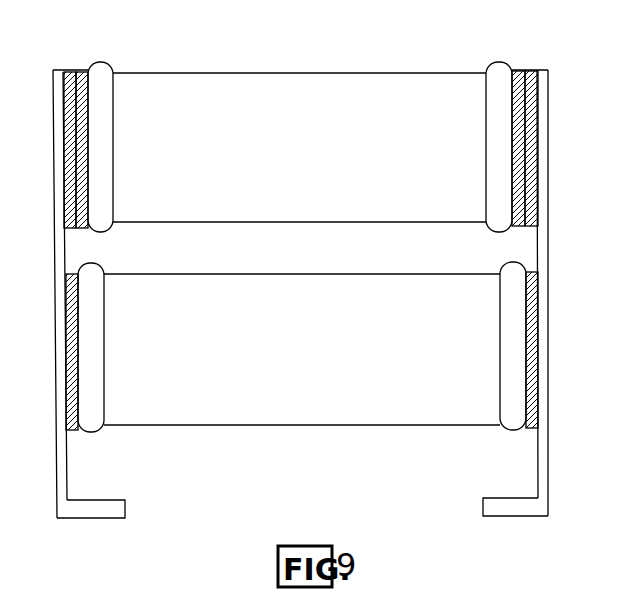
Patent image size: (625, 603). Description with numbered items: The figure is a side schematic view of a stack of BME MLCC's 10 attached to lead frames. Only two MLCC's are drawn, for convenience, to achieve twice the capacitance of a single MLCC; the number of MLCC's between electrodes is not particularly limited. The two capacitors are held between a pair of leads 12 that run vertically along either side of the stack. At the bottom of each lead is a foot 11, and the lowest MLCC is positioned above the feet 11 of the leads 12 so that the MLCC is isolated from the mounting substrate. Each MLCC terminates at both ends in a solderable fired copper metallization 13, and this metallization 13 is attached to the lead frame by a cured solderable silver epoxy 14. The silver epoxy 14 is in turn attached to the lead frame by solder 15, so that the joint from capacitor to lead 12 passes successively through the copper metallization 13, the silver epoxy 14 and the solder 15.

The stack of BME MLCC's 10 is at (297, 92).
The feet 11 is at (108, 507).
The leads 12 is at (56, 186).
The solderable fired copper metallization 13 is at (103, 64).
The cured solderable silver epoxy 14 is at (81, 72).
The solder 15 is at (70, 72).